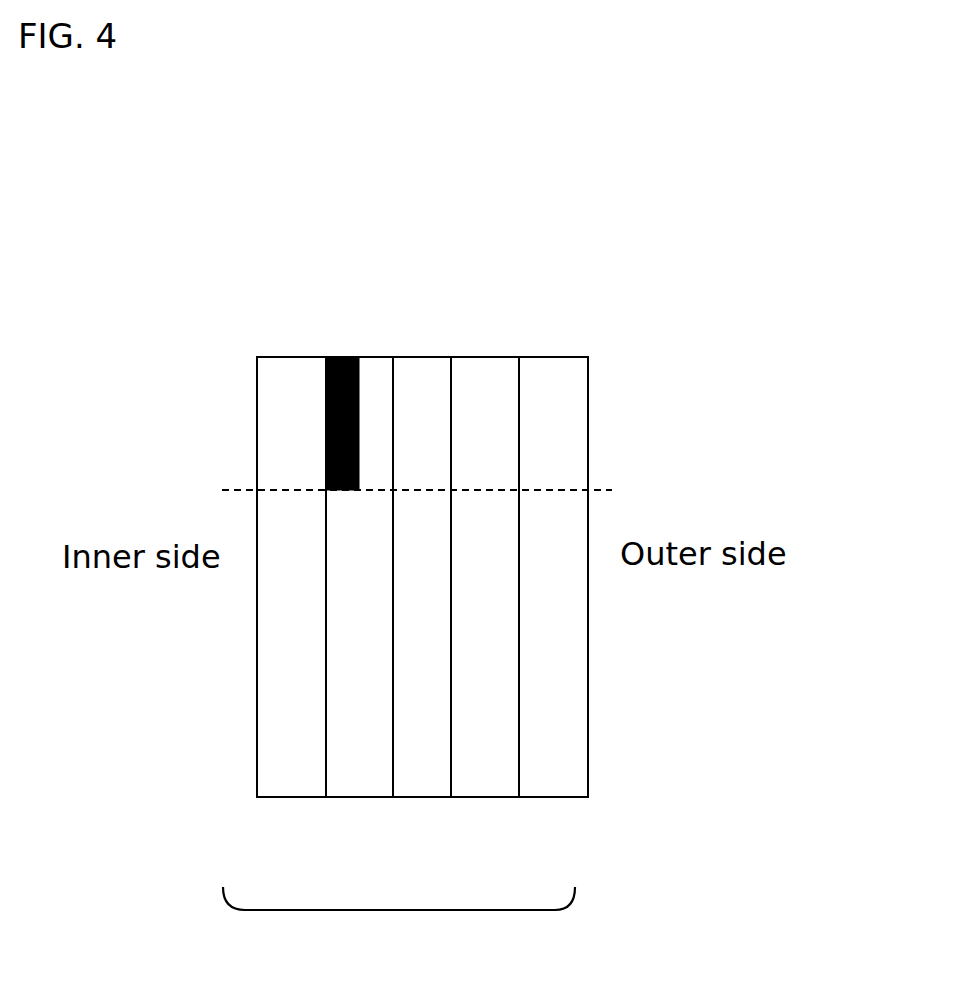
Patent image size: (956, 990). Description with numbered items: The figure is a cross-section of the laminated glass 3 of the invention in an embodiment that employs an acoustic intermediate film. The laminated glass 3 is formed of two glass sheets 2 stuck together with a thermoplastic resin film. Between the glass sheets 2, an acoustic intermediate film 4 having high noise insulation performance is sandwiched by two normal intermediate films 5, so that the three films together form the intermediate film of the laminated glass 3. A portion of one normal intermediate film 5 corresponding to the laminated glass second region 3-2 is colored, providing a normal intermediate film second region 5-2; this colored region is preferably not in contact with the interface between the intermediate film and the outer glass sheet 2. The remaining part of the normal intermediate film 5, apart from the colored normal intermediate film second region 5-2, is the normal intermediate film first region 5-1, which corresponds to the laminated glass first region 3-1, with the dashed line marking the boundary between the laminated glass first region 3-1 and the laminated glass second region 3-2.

The glass sheet 2 is at (285, 797).
The normal intermediate film 5 is at (353, 797).
The acoustic intermediate film 4 is at (422, 797).
The normal intermediate film second region 5-2 is at (337, 357).
The normal intermediate film first region 5-1 is at (357, 635).
The laminated glass second region 3-2 is at (615, 432).
The laminated glass first region 3-1 is at (615, 682).
The laminated glass 3 is at (399, 928).